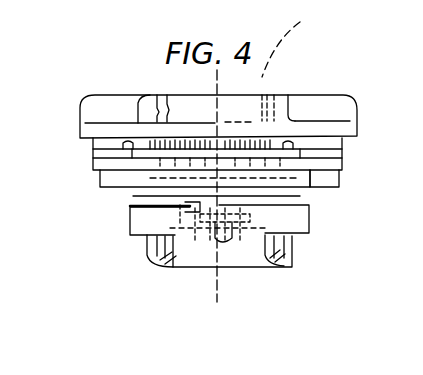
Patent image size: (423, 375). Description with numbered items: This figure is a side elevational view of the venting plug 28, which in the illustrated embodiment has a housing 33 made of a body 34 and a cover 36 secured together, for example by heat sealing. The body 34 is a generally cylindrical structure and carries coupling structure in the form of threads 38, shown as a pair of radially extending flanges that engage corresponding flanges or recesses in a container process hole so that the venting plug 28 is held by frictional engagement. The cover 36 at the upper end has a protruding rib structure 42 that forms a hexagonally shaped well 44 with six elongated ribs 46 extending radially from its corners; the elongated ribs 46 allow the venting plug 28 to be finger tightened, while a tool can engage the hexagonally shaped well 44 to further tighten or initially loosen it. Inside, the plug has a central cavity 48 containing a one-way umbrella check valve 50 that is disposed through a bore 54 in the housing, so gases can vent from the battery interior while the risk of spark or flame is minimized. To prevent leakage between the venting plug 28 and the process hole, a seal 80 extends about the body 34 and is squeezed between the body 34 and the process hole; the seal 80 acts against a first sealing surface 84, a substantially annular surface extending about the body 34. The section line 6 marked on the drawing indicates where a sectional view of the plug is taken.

The venting plug 28 is at (295, 281).
The housing 33 is at (93, 150).
The body 34 is at (133, 237).
The cover 36 is at (80, 118).
The threads 38 is at (309, 221).
The protruding rib structure 42 is at (98, 93).
The hexagonally shaped well 44 is at (297, 42).
The elongated ribs 46 is at (320, 103).
The central cavity 48 is at (133, 200).
The one-way umbrella check valve 50 is at (299, 191).
The bore 54 is at (180, 268).
The seal 80 is at (100, 183).
The first sealing surface 84 is at (344, 175).
The section line 6- 6 is at (173, 80).